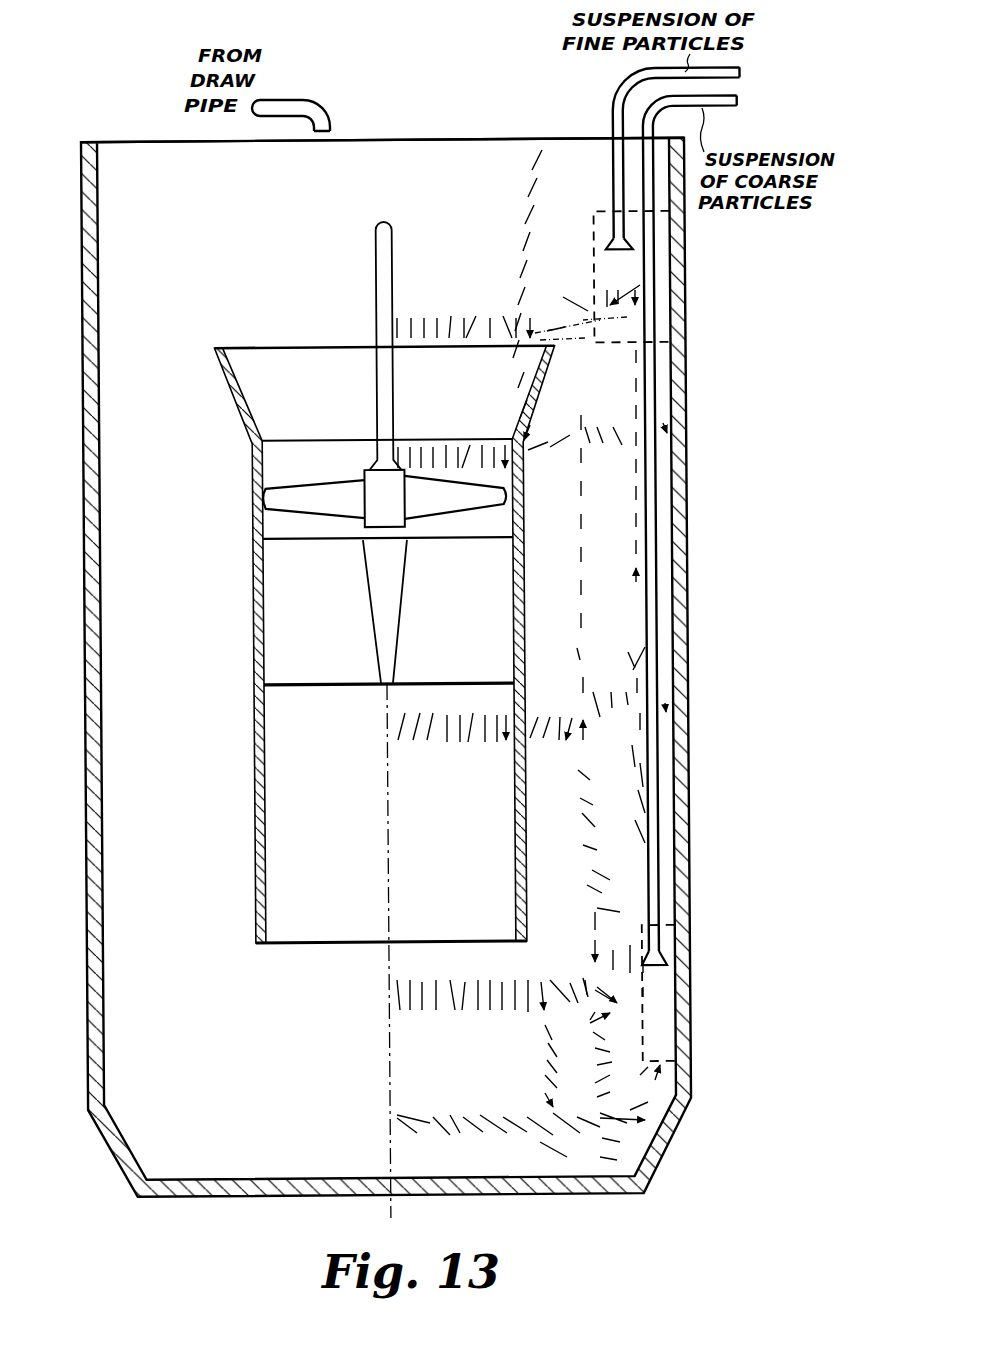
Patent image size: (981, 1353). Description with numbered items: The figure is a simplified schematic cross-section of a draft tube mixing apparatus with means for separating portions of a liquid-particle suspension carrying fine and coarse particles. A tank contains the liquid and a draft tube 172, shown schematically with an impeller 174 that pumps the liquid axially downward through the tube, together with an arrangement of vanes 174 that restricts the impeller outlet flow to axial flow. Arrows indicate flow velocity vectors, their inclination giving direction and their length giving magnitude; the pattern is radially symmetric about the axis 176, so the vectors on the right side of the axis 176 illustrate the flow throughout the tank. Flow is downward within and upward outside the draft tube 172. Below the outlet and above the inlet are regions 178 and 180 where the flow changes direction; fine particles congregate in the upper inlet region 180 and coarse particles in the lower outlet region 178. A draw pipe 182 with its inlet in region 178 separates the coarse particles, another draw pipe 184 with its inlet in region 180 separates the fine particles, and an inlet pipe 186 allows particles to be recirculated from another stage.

The draft tube 172 is at (252, 617).
The impeller 174 is at (331, 490).
The axis 176 is at (390, 1063).
The lower outlet region 178 is at (663, 1031).
The upper inlet region 180 is at (665, 276).
The draw pipe 182 is at (659, 868).
The draw pipe 184 is at (617, 149).
The inlet pipe 186 is at (332, 110).